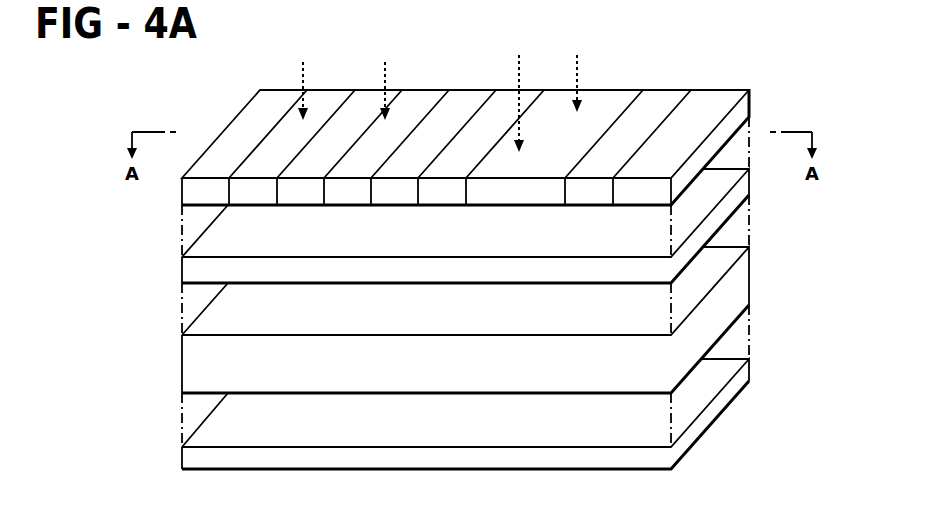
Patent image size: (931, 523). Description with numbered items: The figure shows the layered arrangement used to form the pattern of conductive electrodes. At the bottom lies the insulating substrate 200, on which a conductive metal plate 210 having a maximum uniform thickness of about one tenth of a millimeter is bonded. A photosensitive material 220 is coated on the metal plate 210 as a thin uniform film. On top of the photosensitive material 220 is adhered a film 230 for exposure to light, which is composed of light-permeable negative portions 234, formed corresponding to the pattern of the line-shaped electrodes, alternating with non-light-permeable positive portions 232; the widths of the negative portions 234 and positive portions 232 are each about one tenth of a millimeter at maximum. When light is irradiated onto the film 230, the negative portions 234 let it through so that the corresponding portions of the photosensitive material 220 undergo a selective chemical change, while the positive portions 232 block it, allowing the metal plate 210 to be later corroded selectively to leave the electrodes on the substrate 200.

The insulating substrate 200 is at (182, 456).
The conductive metal plate 210 is at (192, 358).
The photosensitive material 220 is at (192, 270).
The film for exposure to light 230 is at (192, 188).
The positive portions 232 is at (305, 160).
The negative portions 234 is at (323, 107).